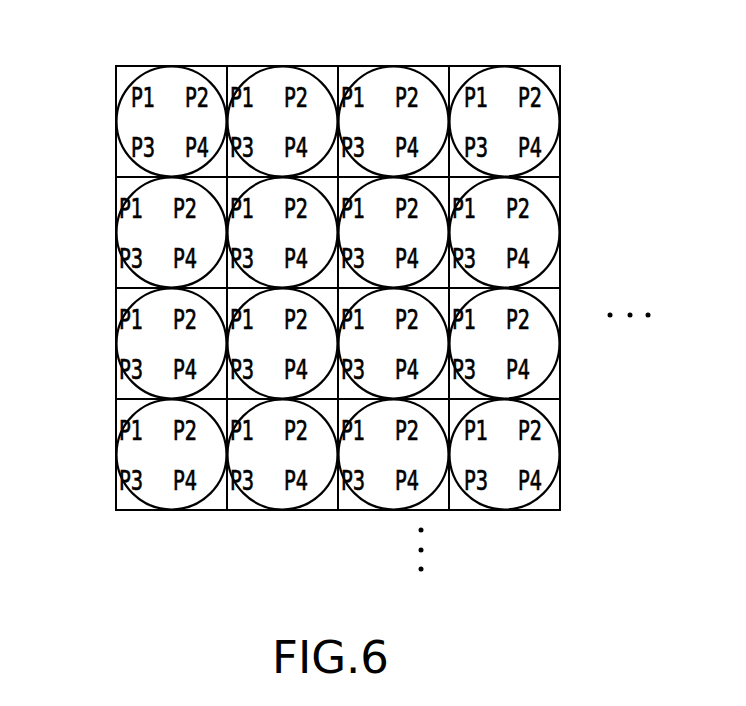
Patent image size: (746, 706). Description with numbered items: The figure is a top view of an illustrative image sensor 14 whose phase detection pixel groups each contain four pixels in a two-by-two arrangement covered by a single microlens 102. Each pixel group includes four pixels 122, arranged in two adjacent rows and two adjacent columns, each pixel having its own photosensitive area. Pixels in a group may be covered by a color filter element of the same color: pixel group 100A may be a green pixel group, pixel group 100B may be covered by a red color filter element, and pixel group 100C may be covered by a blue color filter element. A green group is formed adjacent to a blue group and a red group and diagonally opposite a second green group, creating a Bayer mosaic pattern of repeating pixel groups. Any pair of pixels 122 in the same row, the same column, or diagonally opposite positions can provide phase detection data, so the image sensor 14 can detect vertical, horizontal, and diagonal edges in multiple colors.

The image sensor 14 is at (363, 287).
The pixel group 100A is at (212, 65).
The pixel group 100B is at (562, 72).
The pixel group 100C is at (443, 512).
The microlens 102 is at (128, 169).
The pixels 122 is at (190, 90).